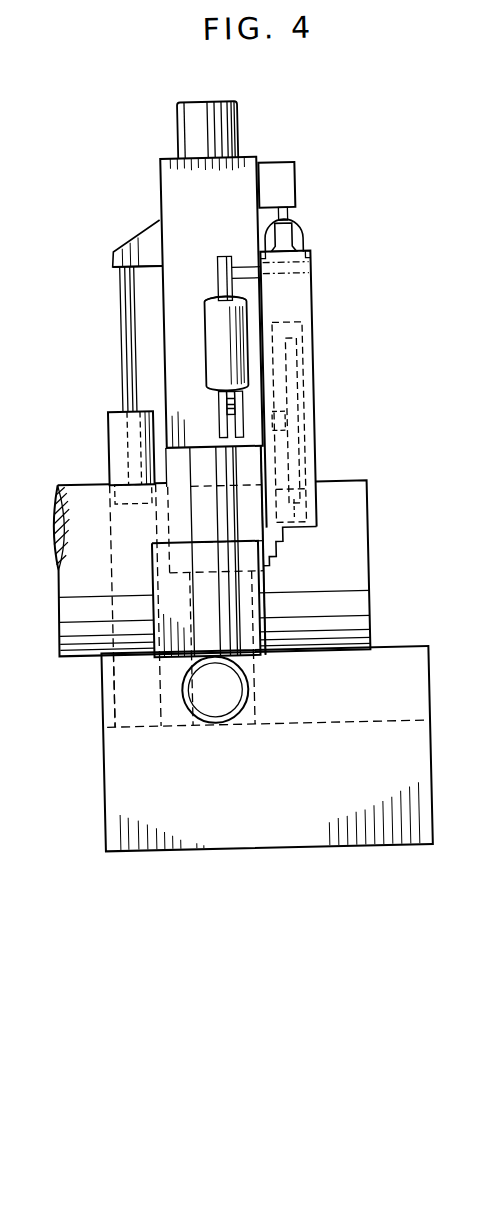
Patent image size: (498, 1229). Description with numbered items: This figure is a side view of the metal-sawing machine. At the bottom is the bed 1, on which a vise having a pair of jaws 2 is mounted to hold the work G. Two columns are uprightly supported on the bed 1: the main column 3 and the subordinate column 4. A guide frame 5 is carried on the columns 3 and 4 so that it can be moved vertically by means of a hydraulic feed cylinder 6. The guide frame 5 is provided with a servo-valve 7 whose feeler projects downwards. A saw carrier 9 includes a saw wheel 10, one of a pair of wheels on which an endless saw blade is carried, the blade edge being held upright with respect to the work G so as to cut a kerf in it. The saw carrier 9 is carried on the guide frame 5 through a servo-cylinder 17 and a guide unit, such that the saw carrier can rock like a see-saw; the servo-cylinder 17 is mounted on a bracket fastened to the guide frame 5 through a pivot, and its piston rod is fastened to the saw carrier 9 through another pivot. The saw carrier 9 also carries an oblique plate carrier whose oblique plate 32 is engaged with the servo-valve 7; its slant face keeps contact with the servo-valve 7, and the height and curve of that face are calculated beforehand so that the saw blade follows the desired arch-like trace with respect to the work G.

The bed 1 is at (121, 770).
The jaws 2 is at (253, 588).
The main column 3 is at (188, 126).
The subordinate column 4 is at (204, 112).
The guide frame 5 is at (187, 193).
The hydraulic feed cylinder 6 is at (119, 442).
The servo-valve 7 is at (290, 186).
The saw carrier 9 is at (302, 297).
The saw wheel 10 is at (299, 426).
The servo-cylinder 17 is at (220, 344).
The oblique plate 32 is at (296, 238).
The work G is at (355, 574).